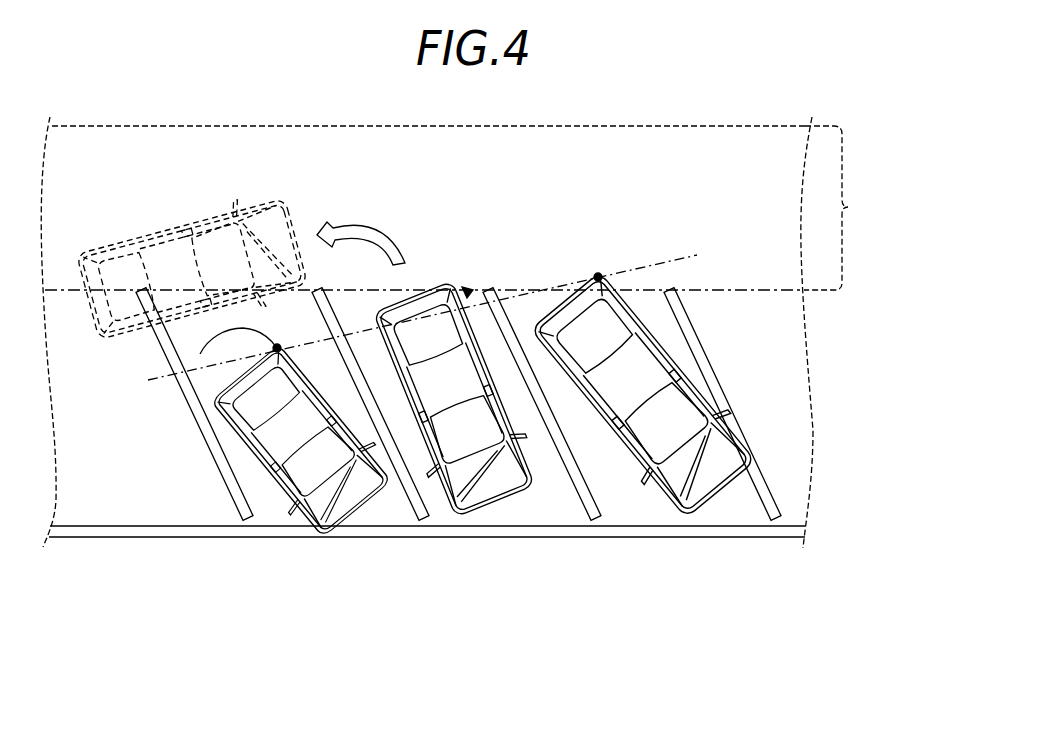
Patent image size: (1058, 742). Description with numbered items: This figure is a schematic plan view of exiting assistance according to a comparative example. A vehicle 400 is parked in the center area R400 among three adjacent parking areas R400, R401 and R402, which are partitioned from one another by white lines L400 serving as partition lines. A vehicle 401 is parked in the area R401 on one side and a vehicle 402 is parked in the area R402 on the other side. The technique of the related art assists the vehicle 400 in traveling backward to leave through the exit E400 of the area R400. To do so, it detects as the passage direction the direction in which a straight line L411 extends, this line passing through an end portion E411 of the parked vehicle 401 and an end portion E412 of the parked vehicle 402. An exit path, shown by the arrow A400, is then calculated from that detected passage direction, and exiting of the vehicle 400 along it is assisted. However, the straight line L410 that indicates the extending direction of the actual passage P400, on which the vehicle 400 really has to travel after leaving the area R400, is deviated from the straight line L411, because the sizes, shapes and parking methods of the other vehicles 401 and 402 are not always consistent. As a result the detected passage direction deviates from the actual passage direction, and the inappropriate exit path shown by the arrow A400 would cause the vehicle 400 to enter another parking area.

The vehicle 400 is at (453, 513).
The vehicle 401 is at (290, 505).
The vehicle 402 is at (660, 503).
The arrow A400 is at (395, 237).
The exit E400 is at (467, 290).
The end portion E411 is at (268, 351).
The end portion E412 is at (598, 272).
The white line L400 is at (222, 478).
The straight line L410 is at (740, 287).
The straight line L411 is at (665, 255).
The passage P400 is at (473, 332).
The area R400 is at (317, 390).
The area R401 is at (301, 482).
The area R402 is at (643, 446).